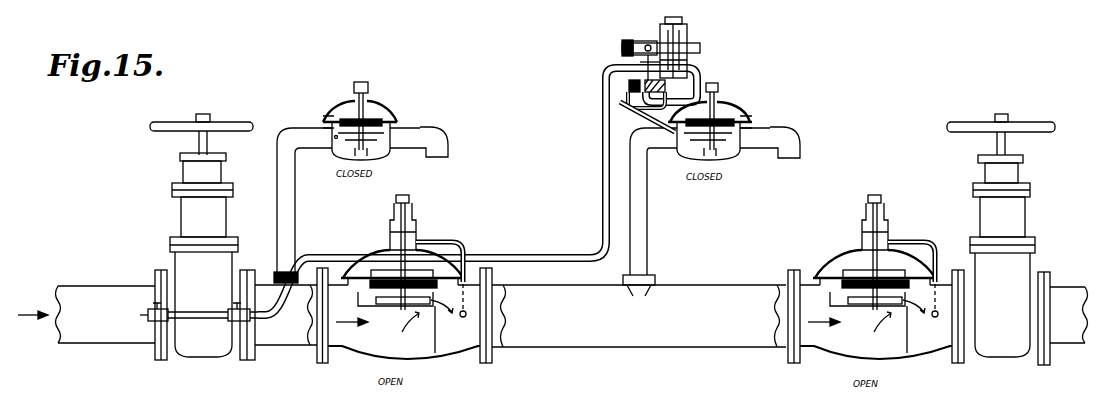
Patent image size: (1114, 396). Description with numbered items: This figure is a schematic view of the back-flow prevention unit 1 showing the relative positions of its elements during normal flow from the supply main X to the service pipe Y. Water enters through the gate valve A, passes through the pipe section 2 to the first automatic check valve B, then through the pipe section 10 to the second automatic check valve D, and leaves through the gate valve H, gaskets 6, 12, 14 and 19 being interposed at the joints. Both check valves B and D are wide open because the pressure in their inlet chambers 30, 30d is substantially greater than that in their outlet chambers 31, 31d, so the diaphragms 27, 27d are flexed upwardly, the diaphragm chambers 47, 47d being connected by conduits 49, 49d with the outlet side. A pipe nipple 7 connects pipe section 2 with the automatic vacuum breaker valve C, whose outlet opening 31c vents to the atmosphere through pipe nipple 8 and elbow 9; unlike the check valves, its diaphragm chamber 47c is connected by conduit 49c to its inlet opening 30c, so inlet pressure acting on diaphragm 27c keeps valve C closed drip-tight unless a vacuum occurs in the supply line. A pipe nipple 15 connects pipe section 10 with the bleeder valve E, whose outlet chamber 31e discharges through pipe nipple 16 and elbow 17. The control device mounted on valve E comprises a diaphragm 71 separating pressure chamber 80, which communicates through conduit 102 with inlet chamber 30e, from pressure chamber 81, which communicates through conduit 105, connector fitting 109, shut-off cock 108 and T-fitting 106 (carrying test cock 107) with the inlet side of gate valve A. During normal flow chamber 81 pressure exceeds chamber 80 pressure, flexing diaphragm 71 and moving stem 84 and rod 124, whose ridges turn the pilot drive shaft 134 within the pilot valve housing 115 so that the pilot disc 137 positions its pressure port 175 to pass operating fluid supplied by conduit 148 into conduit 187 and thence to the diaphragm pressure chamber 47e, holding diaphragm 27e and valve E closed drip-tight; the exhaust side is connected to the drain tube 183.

The back-flow prevention unit 1 is at (718, 284).
The pipe section 2 is at (302, 338).
The gasket 6 is at (322, 365).
The pipe nipple 7 is at (296, 226).
The pipe nipple 8 is at (410, 126).
The elbow 9 is at (448, 138).
The pipe section 10 is at (565, 342).
The gasket 12 is at (487, 364).
The gasket 14 is at (791, 270).
The pipe nipple 15 is at (648, 240).
The pipe nipple 16 is at (764, 158).
The elbow 17 is at (800, 136).
The gasket 19 is at (958, 364).
The diaphragm 27 is at (366, 262).
The diaphragm 27c is at (320, 120).
The diaphragm 27d is at (822, 270).
The diaphragm 27e is at (752, 122).
The inlet chamber 30 is at (362, 348).
The inlet opening 30c is at (334, 158).
The inlet chamber 30d is at (830, 348).
The inlet chamber 30e is at (682, 160).
The outlet chamber 31 is at (446, 352).
The outlet opening 31c is at (384, 154).
The outlet chamber 31d is at (928, 352).
The outlet chamber 31e is at (736, 156).
The diaphragm chamber 47 is at (386, 254).
The diaphragm chamber 47c is at (384, 104).
The diaphragm chamber 47d is at (850, 256).
The diaphragm pressure chamber 47e is at (733, 104).
The conduit 49 is at (458, 242).
The conduit 49c is at (342, 104).
The conduit 49d is at (928, 242).
The diaphragm 71 is at (670, 18).
The pressure chamber 80 is at (686, 30).
The pressure chamber 81 is at (646, 40).
The stem 84 is at (700, 47).
The conduit 102 is at (697, 80).
The conduit 105 is at (527, 256).
The T-fitting 106 is at (183, 310).
The test cock 107 is at (155, 318).
The shut-off cock 108 is at (226, 318).
The connector fitting 109 is at (252, 345).
The pilot valve housing 115 is at (642, 42).
The rod 124 is at (622, 46).
The pilot drive shaft 134 is at (640, 62).
The pilot disc 137 is at (630, 87).
The conduit 148 is at (638, 112).
The pressure port 175 is at (628, 83).
The drain tube 183 is at (660, 88).
The conduit 187 is at (640, 98).
The gate valve A is at (188, 213).
The first automatic check valve B is at (410, 212).
The automatic vacuum breaker valve C is at (372, 104).
The second automatic check valve D is at (882, 197).
The bleeder valve E is at (713, 90).
The gate valve H is at (1018, 217).
The supply main X is at (95, 288).
The service pipe Y is at (1068, 298).